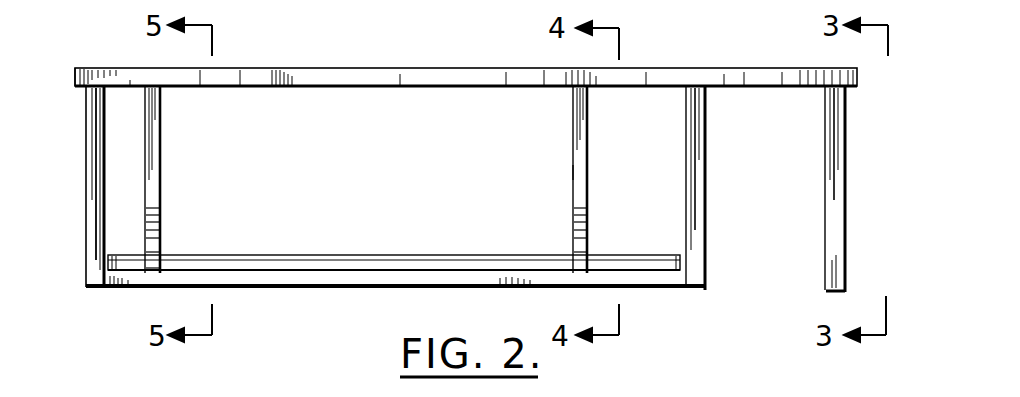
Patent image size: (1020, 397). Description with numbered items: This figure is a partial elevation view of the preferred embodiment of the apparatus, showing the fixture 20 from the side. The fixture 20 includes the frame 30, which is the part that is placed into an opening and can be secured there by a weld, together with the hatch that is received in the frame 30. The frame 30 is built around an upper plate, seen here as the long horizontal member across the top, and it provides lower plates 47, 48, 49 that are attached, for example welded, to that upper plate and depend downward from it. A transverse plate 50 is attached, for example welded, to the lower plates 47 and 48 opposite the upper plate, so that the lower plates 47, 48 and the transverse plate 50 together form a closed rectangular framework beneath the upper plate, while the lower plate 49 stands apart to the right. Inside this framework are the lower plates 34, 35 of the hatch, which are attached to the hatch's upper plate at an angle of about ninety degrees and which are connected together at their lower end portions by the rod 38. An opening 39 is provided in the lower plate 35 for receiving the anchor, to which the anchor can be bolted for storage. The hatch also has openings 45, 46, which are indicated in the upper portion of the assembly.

The fixture 20 is at (76, 78).
The frame 30 is at (484, 68).
The lower plate 34 is at (160, 150).
The lower plate 35 is at (588, 142).
The rod 38 is at (402, 258).
The opening 39 is at (568, 178).
The opening 45 is at (218, 78).
The opening 46 is at (530, 82).
The lower plate 47 is at (92, 245).
The lower plate 48 is at (705, 268).
The lower plate 49 is at (828, 222).
The transverse plate 50 is at (372, 276).